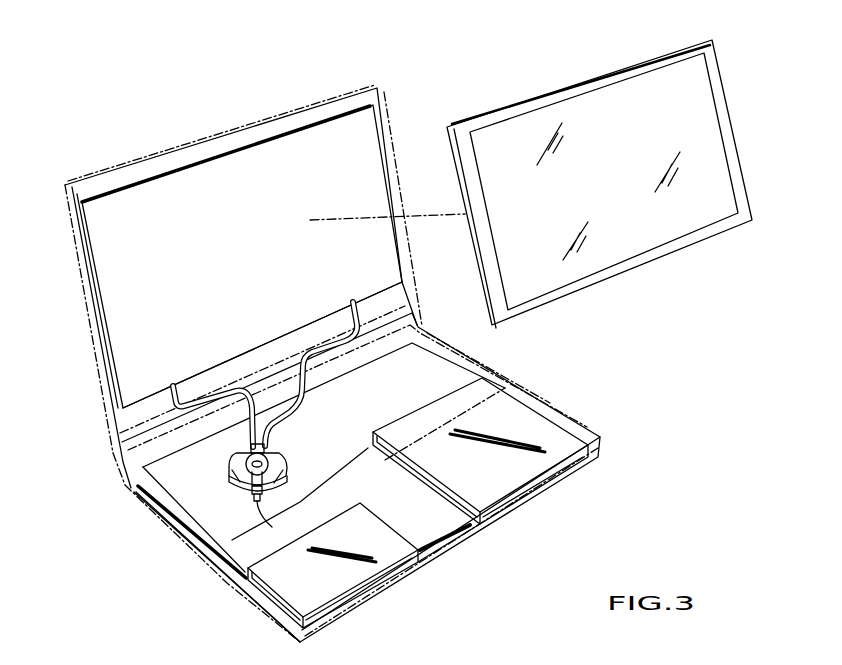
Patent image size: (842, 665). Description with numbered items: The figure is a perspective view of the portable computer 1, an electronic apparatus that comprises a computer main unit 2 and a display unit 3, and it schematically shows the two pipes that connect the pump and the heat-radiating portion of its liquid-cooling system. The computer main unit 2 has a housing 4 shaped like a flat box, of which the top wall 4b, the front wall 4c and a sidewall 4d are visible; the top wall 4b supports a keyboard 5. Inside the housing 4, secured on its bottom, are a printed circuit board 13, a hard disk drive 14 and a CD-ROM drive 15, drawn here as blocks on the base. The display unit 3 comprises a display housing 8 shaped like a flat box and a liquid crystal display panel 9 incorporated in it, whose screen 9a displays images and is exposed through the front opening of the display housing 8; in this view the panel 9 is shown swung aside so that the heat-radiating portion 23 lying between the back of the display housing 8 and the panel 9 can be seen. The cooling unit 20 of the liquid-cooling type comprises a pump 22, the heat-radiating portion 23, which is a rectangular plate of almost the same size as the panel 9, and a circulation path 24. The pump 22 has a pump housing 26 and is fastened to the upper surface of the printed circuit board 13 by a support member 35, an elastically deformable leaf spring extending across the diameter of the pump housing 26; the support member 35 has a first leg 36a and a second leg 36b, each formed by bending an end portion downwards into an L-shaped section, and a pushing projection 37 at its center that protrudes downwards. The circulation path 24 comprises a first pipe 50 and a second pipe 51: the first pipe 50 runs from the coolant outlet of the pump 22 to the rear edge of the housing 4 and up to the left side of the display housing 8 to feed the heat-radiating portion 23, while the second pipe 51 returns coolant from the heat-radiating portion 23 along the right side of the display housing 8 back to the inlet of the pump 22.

The portable computer 1 is at (377, 70).
The computer main unit 2 is at (192, 562).
The display unit 3 is at (88, 165).
The housing 4 is at (590, 430).
The top wall 4b is at (513, 415).
The front wall 4c is at (467, 538).
The sidewall 4d is at (248, 590).
The keyboard 5 is at (460, 363).
The display housing 8 is at (82, 283).
The liquid crystal display panel 9 is at (718, 88).
The screen 9a is at (597, 168).
The printed circuit board 13 is at (440, 540).
The hard disk drive 14 is at (350, 578).
The CD-ROM drive 15 is at (535, 462).
The cooling unit 20 is at (300, 449).
The pump 22 is at (230, 461).
The heat-radiating portion 23 is at (250, 158).
The circulation path 24 is at (291, 302).
The pump housing 26 is at (285, 464).
The support member 35 is at (240, 482).
The first leg 36a is at (286, 437).
The second leg 36b is at (272, 527).
The pushing projection 37 is at (273, 483).
The first pipe 50 is at (253, 390).
The second pipe 51 is at (305, 357).